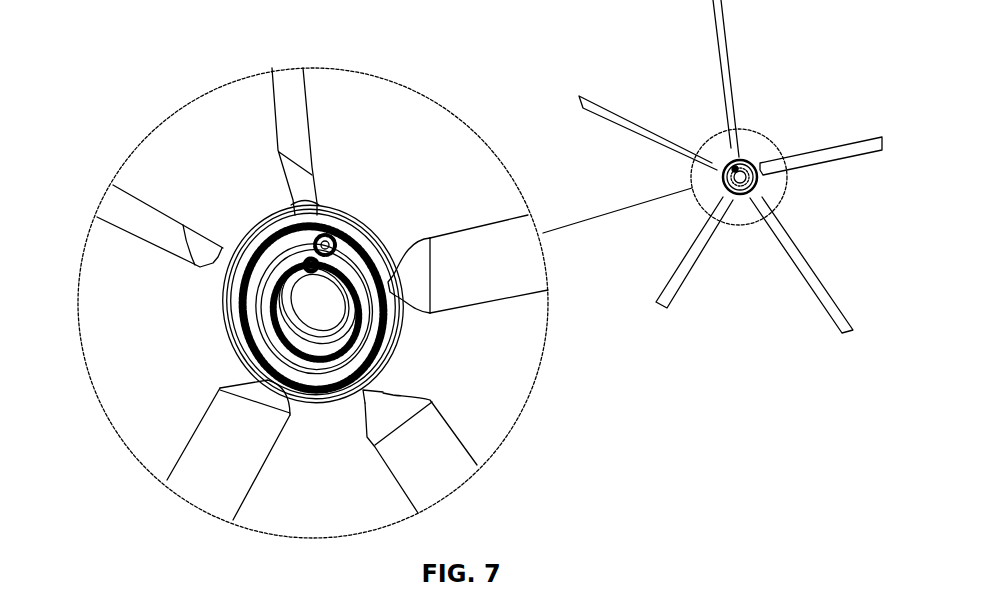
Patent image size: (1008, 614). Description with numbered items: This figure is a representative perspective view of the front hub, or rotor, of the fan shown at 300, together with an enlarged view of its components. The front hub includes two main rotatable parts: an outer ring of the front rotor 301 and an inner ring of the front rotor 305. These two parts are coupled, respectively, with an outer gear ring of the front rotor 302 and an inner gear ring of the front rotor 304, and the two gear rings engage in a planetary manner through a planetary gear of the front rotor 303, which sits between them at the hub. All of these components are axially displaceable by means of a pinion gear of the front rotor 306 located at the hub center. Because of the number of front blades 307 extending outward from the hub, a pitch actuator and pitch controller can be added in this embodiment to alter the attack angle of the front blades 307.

The fan 300 is at (730, 165).
The outer ring of the front rotor 301 is at (272, 215).
The outer gear ring of the front rotor 302 is at (233, 246).
The planetary gear of the front rotor 303 is at (336, 238).
The inner gear ring of the front rotor 304 is at (270, 257).
The inner ring of the front rotor 305 is at (346, 321).
The pinion gear of the front rotor 306 is at (310, 264).
The front blades 307 is at (196, 432).